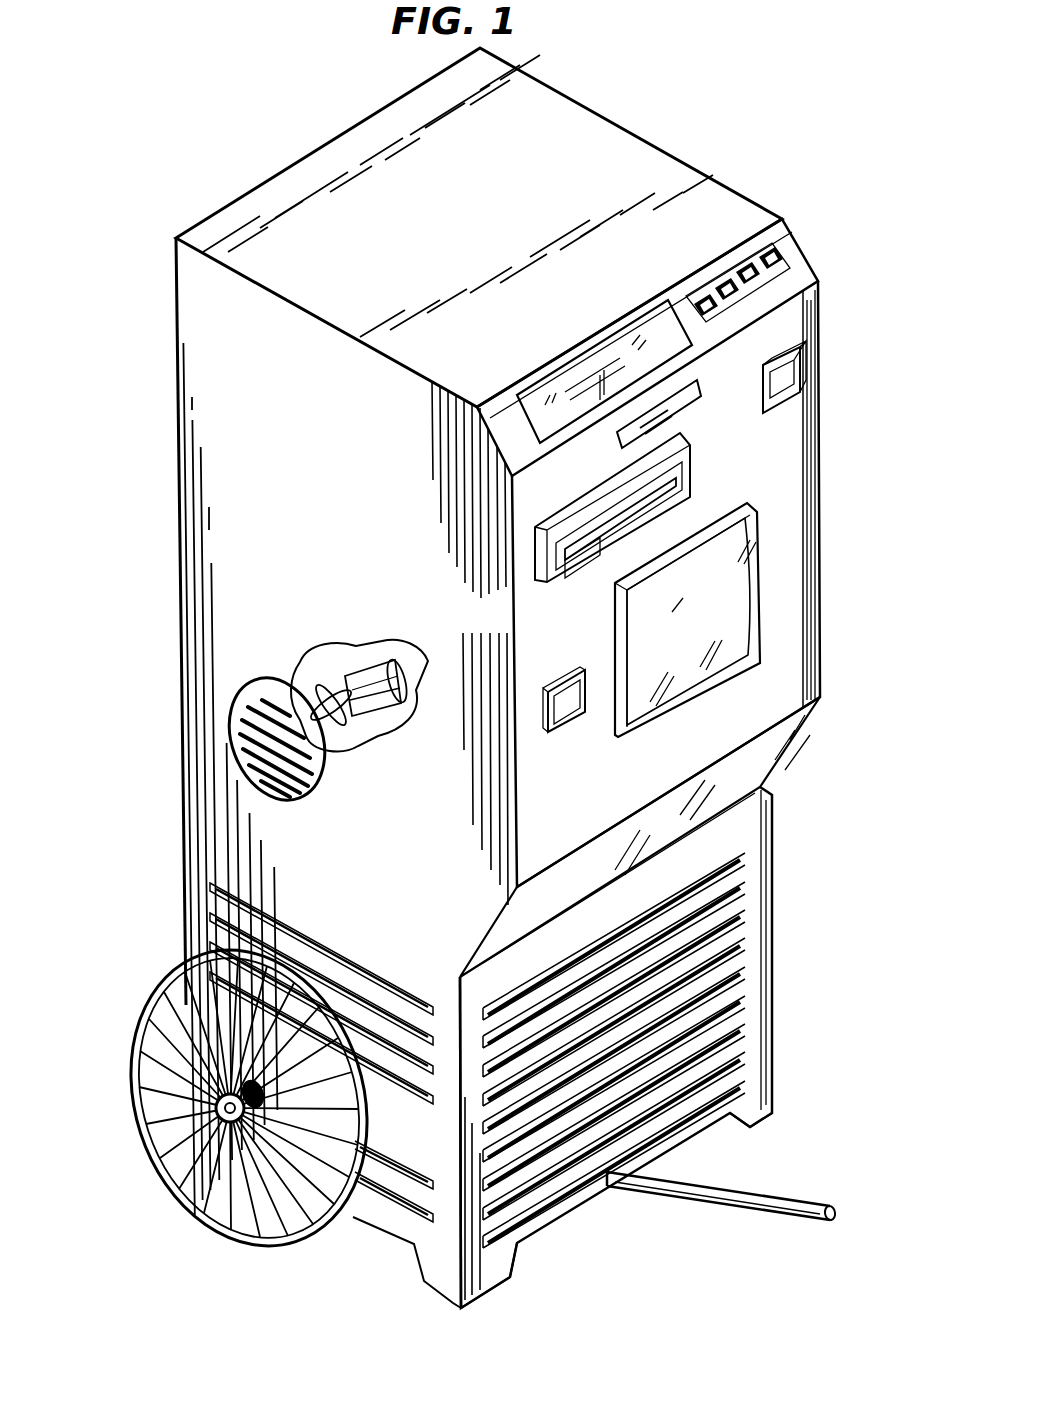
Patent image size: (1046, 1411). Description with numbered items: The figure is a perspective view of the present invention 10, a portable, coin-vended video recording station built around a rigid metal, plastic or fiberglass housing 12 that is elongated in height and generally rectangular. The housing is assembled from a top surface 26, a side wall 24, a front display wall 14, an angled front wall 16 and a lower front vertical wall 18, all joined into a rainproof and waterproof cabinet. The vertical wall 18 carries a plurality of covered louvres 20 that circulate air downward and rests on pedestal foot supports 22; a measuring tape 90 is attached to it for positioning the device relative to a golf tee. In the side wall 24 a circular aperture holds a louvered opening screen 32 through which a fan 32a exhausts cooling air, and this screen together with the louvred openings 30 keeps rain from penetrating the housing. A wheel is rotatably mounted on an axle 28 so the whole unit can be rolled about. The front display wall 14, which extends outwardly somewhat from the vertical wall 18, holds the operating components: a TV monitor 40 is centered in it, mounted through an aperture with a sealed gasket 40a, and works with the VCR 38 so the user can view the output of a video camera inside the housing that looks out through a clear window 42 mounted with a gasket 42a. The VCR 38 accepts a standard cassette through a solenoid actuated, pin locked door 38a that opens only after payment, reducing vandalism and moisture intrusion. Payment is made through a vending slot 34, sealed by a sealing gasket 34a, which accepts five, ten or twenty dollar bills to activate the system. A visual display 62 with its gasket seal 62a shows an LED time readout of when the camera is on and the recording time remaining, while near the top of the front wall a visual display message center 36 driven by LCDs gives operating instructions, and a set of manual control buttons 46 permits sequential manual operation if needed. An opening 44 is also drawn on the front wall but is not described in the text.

The present invention 10 is at (152, 448).
The housing 12 is at (212, 528).
The front display wall 14 is at (820, 560).
The angled front wall 16 is at (776, 760).
The vertical wall 18 is at (775, 978).
The covered louvres 20 is at (770, 888).
The foot supports 22 is at (488, 1275).
The side wall 24 is at (193, 300).
The top surface 26 is at (578, 124).
The axle 28 is at (249, 1235).
The louvred openings 30 is at (415, 1222).
The louvered opening screen 32 is at (238, 690).
The fan 32a is at (352, 648).
The vending slot 34 is at (818, 420).
The sealing gasket 34a is at (810, 370).
The visual display message center 36 is at (655, 320).
The VCR 38 is at (545, 580).
The pin locked door 38a is at (580, 548).
The TV monitor 40 is at (735, 650).
The sealed gasket 40a is at (762, 578).
The clear window 42 is at (565, 725).
The gasket 42a is at (583, 672).
The slot 44 is at (690, 500).
The manual control buttons 46 is at (790, 255).
The visual display 62 is at (698, 396).
The gasket seal 62a is at (788, 335).
The measuring tape 90 is at (725, 1200).